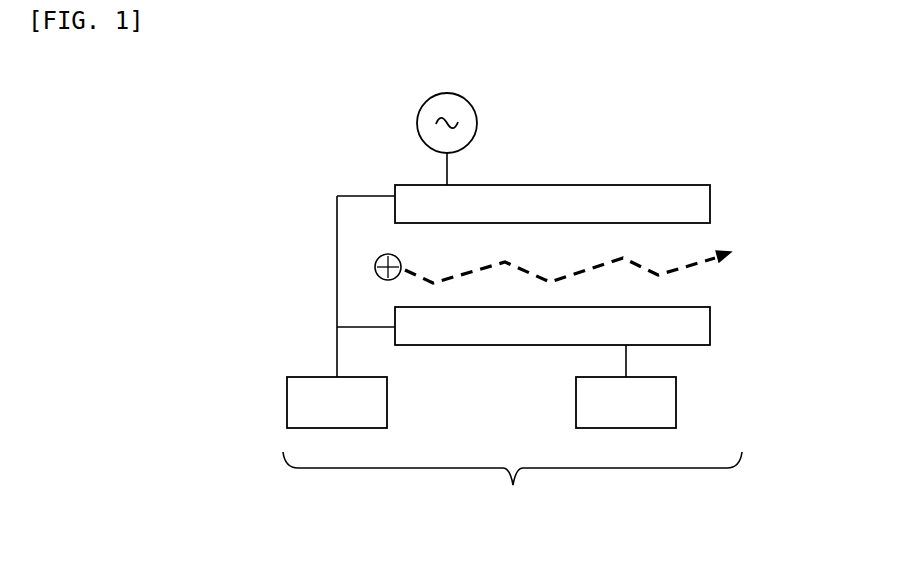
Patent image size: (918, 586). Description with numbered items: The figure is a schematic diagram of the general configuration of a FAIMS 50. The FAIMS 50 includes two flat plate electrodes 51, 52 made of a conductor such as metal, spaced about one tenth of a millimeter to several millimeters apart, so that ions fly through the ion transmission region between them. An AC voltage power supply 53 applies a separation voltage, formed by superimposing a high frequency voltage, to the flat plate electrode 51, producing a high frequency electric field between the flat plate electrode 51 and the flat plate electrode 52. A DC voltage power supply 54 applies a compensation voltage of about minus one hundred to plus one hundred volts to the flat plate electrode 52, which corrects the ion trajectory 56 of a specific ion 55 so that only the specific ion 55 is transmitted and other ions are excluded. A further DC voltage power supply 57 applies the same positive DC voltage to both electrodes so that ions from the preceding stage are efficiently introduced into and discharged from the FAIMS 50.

The FAIMS 50 is at (512, 487).
The flat plate electrode 51 is at (693, 185).
The flat plate electrode 52 is at (693, 345).
The AC voltage power supply 53 is at (420, 110).
The DC voltage power supply 54 is at (626, 402).
The specific ion 55 is at (387, 253).
The ion trajectory 56 is at (705, 263).
The DC voltage power supply 57 is at (337, 402).